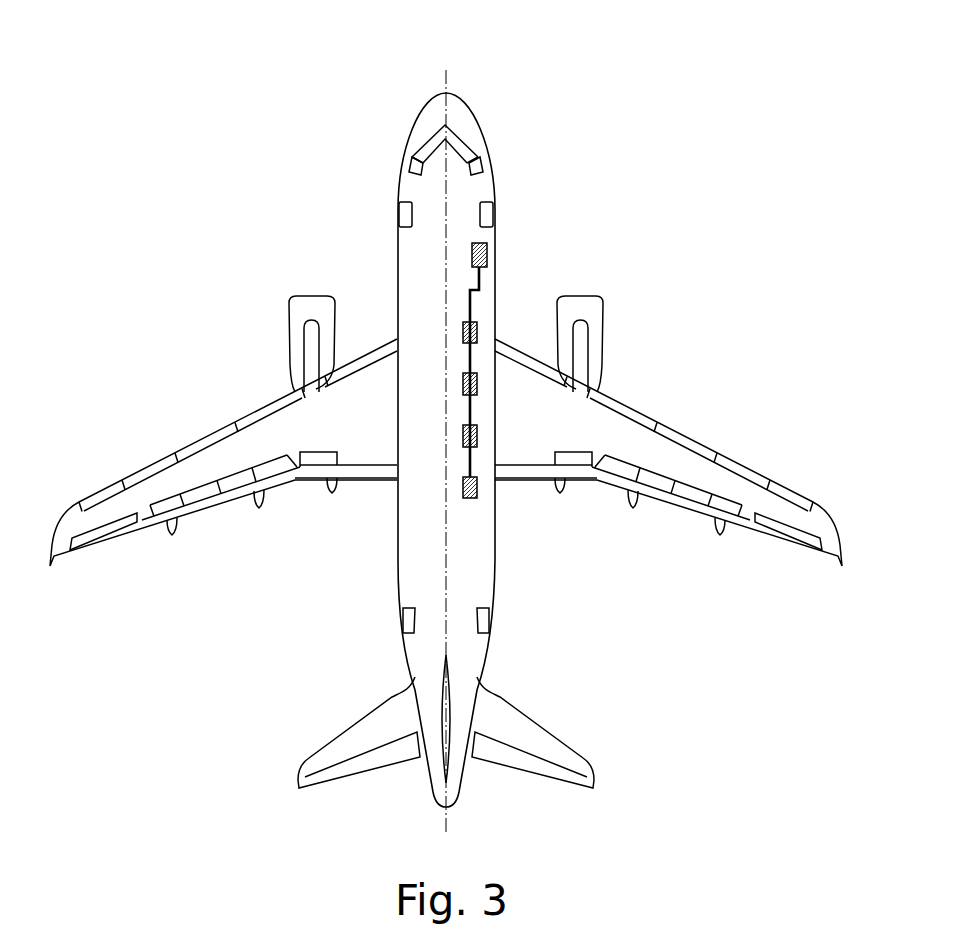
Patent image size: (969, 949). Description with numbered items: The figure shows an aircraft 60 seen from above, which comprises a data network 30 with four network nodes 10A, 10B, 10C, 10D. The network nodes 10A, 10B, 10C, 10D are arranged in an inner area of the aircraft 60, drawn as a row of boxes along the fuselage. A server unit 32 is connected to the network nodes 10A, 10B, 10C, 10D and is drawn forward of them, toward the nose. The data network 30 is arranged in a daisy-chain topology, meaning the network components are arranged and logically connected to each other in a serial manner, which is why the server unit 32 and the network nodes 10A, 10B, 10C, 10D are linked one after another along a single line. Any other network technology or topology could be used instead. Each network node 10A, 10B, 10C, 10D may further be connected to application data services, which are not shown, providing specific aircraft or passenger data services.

The aircraft 60 is at (582, 82).
The data network 30 is at (485, 337).
The server unit 32 is at (480, 242).
The network node 10A is at (463, 330).
The network node 10B is at (463, 381).
The network node 10C is at (463, 432).
The network node 10D is at (463, 485).